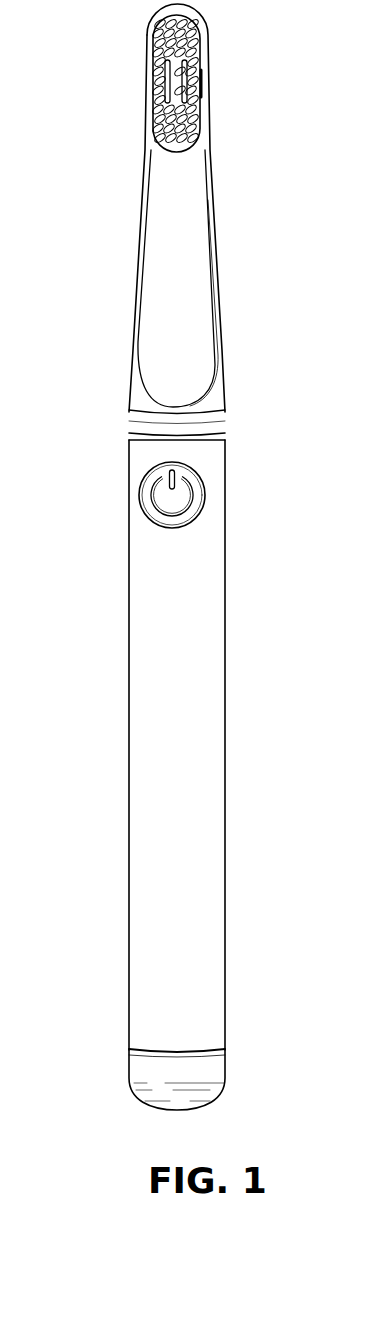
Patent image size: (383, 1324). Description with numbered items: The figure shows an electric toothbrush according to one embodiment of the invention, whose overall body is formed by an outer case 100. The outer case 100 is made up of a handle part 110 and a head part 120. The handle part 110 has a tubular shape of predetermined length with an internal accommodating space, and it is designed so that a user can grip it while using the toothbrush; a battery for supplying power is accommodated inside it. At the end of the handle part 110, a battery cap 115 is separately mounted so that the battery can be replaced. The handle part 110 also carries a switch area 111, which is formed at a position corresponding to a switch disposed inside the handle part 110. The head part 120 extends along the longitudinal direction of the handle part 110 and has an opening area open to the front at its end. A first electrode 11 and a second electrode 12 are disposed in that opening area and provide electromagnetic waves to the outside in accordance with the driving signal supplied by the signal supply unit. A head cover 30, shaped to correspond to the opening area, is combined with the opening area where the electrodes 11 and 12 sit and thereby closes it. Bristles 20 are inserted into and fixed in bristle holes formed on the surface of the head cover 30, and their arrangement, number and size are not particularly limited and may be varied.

The outer case 100 is at (230, 497).
The handle part 110 is at (147, 800).
The switch area 111 is at (146, 499).
The battery cap 115 is at (145, 1068).
The head part 120 is at (205, 115).
The first electrode 11 is at (202, 92).
The second electrode 12 is at (153, 83).
The bristles 20 is at (148, 110).
The head cover 30 is at (193, 33).